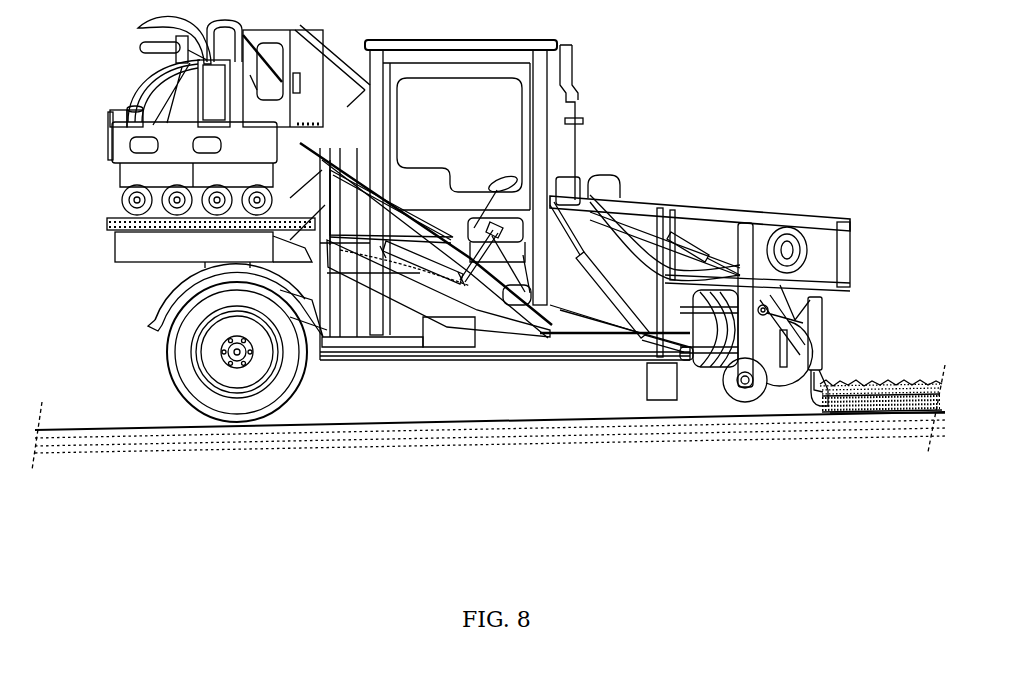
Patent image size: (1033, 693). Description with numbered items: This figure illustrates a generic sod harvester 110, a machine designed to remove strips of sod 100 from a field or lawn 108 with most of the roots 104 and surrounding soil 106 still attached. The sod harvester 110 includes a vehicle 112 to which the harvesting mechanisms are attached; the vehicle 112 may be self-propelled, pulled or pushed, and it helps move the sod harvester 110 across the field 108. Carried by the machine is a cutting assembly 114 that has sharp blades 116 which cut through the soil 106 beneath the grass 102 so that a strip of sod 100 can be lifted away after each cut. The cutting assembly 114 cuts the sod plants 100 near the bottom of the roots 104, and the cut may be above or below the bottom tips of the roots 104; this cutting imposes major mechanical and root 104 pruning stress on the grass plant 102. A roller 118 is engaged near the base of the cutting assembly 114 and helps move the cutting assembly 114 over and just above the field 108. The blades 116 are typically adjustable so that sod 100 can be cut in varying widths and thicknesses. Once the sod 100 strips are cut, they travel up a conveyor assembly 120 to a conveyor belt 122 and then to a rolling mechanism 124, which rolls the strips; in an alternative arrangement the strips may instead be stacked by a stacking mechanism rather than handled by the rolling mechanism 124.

The sod 100 is at (108, 200).
The grass 102 is at (877, 390).
The roots 104 is at (840, 407).
The soil 106 is at (878, 408).
The field 108 is at (138, 412).
The sod harvester 110 is at (648, 127).
The vehicle 112 is at (740, 210).
The cutting assembly 114 is at (827, 360).
The blades 116 is at (813, 398).
The roller 118 is at (728, 404).
The conveyor assembly 120 is at (421, 310).
The conveyor belt 122 is at (108, 232).
The rolling mechanism 124 is at (110, 160).